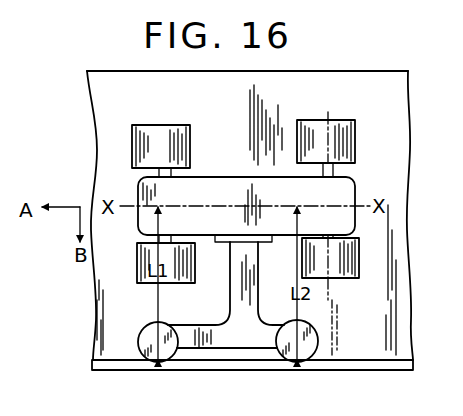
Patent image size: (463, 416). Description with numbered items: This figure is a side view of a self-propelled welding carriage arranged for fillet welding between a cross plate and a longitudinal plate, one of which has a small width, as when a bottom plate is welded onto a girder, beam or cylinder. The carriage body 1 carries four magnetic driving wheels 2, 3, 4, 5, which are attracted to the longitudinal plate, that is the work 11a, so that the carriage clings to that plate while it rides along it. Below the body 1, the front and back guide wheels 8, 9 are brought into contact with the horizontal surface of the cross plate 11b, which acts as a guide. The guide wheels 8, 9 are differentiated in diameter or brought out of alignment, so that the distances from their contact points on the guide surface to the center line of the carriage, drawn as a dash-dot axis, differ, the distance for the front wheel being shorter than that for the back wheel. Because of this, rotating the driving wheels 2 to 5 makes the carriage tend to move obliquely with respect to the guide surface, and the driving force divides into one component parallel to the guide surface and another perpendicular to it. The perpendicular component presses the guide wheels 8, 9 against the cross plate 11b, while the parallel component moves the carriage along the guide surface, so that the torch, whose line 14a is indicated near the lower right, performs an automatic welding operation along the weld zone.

The body 1 is at (218, 177).
The magnetic driving wheel 2 is at (132, 141).
The magnetic driving wheel 3 is at (137, 265).
The magnetic driving wheel 4 is at (355, 135).
The magnetic driving wheel 5 is at (358, 266).
The guide wheel 8 is at (140, 351).
The guide wheel 9 is at (278, 366).
The work 11a is at (410, 116).
The cross plate 11b is at (393, 372).
The guide line 14a is at (362, 338).